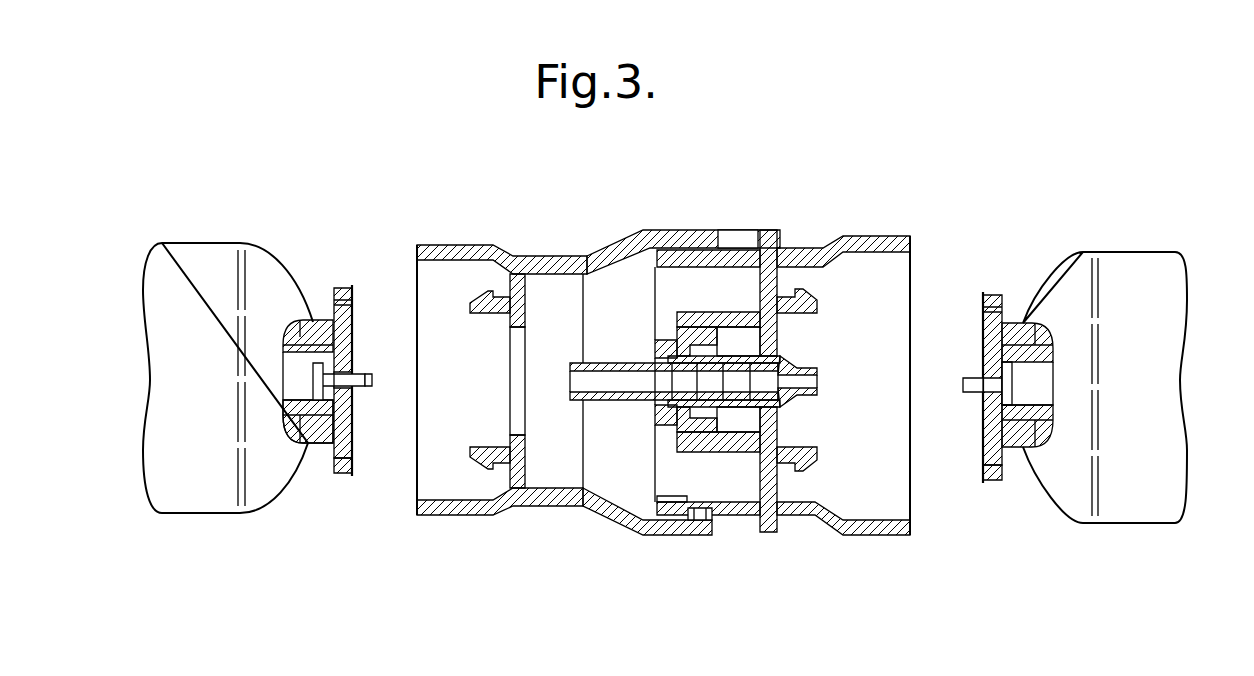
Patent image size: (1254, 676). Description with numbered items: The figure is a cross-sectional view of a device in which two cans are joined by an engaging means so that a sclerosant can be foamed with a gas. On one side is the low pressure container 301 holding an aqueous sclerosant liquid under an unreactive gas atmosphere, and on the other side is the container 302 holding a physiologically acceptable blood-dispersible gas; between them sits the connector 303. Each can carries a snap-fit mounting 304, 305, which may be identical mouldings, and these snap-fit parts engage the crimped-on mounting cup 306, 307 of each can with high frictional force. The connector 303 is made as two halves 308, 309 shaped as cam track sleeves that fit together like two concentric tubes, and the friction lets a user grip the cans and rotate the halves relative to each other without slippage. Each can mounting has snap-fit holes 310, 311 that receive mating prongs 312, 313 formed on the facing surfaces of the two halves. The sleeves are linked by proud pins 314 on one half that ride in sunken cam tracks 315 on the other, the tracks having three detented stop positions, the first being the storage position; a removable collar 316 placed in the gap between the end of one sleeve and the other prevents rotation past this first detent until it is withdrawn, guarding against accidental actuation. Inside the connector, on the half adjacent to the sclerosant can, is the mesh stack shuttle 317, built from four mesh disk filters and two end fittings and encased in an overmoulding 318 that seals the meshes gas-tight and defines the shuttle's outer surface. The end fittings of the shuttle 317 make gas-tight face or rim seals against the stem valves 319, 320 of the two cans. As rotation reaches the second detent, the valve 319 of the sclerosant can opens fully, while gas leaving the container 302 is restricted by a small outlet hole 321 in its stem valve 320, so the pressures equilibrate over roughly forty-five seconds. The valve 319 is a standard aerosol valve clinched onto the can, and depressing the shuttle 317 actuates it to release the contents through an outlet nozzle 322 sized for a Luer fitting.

The low pressure container 301 is at (1118, 262).
The container 302 is at (312, 325).
The connector 303 is at (630, 230).
The snap-fit mounting 304 is at (992, 295).
The snap-fit mounting 305 is at (345, 288).
The crimped-on mounting cup 306 is at (1023, 432).
The crimped-on mounting cup 307 is at (315, 432).
The connector half 308 is at (858, 236).
The connector half 309 is at (505, 243).
The snap-fit hole 310 is at (988, 470).
The snap-fit hole 311 is at (350, 462).
The mating prong 312 is at (805, 476).
The mating prong 313 is at (486, 464).
The proud pin 314 is at (700, 521).
The sunken cam track 315 is at (682, 498).
The removable collar 316 is at (738, 230).
The mesh stack shuttle 317 is at (788, 359).
The overmoulding 318 is at (747, 410).
The stem valve 319 is at (965, 386).
The stem valve 320 is at (372, 385).
The small outlet hole 321 is at (352, 378).
The outlet nozzle 322 is at (573, 380).